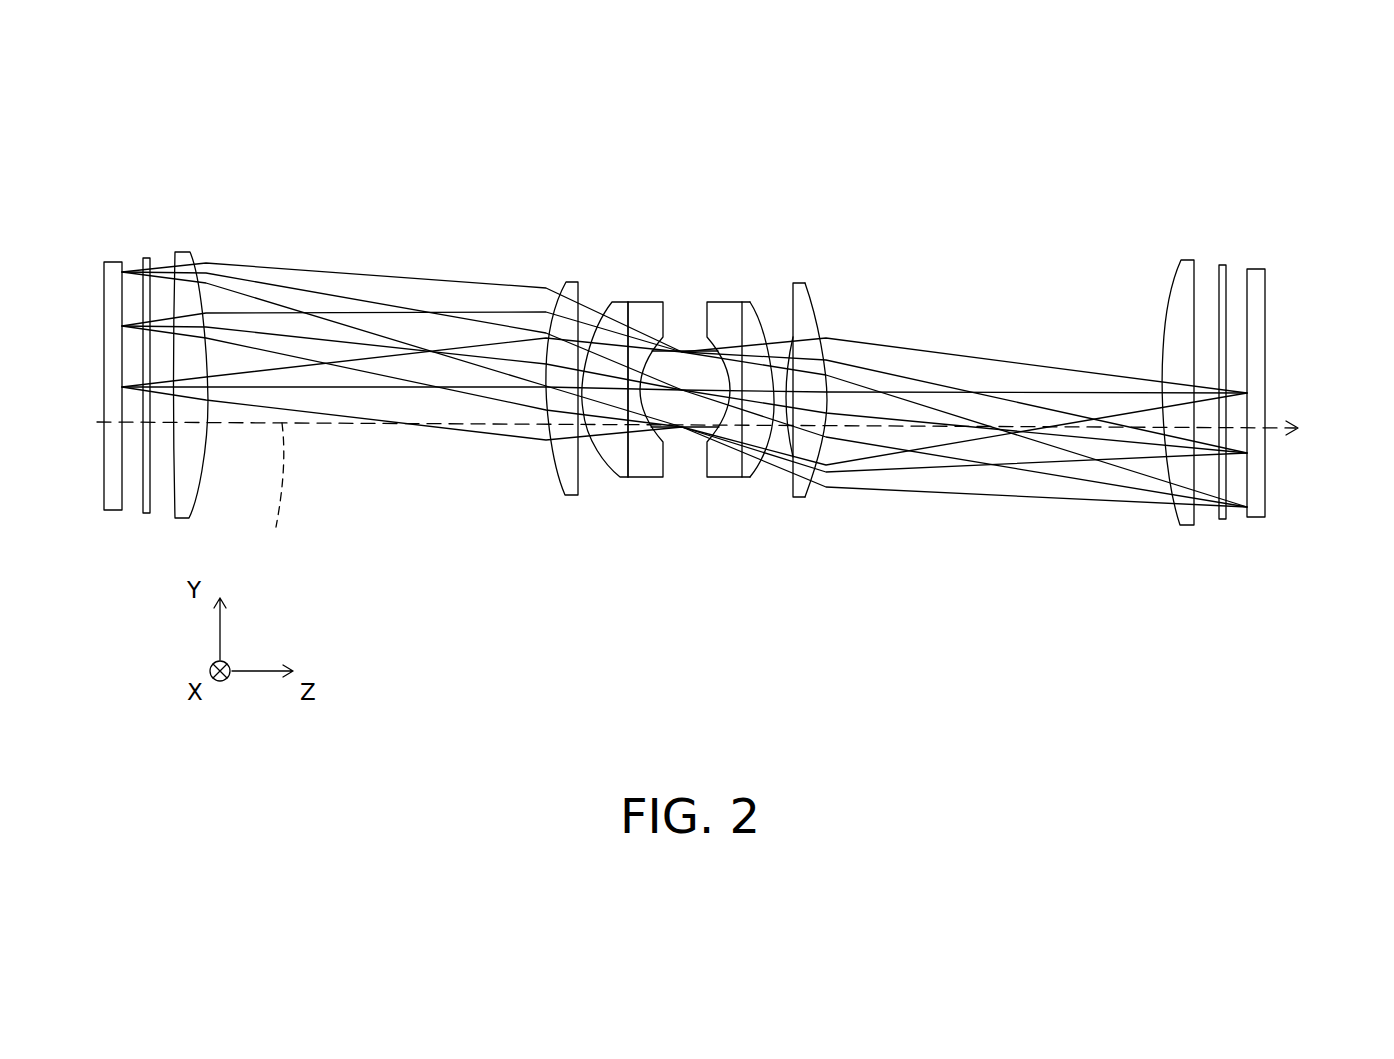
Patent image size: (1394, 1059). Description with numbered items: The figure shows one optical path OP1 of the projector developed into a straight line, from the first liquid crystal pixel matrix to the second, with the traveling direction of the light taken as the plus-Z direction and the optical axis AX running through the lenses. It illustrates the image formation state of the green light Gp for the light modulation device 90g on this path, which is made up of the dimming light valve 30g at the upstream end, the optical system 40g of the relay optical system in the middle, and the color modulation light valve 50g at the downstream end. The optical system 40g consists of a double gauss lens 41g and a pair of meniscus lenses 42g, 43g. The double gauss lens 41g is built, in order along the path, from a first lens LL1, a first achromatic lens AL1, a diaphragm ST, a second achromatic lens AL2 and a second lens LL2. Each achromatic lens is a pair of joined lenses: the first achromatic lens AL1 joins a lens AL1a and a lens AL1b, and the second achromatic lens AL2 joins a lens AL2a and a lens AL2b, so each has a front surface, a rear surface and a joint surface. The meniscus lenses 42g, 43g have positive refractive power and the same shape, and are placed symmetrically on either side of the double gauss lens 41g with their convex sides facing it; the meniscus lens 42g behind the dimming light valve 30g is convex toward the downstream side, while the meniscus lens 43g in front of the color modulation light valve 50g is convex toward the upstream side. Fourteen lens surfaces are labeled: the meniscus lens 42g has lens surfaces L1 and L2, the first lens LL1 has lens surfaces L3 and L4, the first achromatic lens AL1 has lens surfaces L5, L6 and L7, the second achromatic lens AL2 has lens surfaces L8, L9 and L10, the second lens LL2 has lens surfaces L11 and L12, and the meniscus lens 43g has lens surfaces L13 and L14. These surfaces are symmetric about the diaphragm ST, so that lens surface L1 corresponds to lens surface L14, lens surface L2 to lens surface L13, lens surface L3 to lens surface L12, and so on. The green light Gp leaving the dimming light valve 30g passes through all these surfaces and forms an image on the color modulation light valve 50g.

The dimming light valve 30g is at (103, 216).
The meniscus lens 42g is at (185, 252).
The lens surface L1 is at (248, 192).
The lens surface L2 is at (222, 343).
The green light Gp is at (435, 347).
The optical path OP1 is at (268, 491).
The optical axis AX is at (393, 390).
The light modulation device 90g is at (727, 118).
The optical system 40g is at (588, 118).
The double gauss lens 41g is at (697, 175).
The first lens LL1 is at (540, 352).
The lens surface L3 is at (541, 283).
The first achromatic lens AL1 is at (624, 377).
The lens AL1a is at (617, 355).
The lens AL1b is at (659, 400).
The lens surface L4 is at (598, 303).
The lens surface L5 is at (612, 303).
The lens surface L6 is at (643, 303).
The diaphragm ST is at (685, 351).
The second achromatic lens AL2 is at (752, 401).
The lens AL2b is at (711, 388).
The lens AL2a is at (761, 388).
The lens surface L7 is at (671, 305).
The lens surface L8 is at (705, 303).
The lens surface L9 is at (735, 303).
The second lens LL2 is at (797, 364).
The lens surface L10 is at (768, 303).
The lens surface L11 is at (789, 301).
The lens surface L12 is at (826, 303).
The meniscus lens 43g is at (1180, 297).
The lens surface L13 is at (1163, 347).
The lens surface L14 is at (1191, 323).
The color modulation light valve 50g is at (1254, 244).